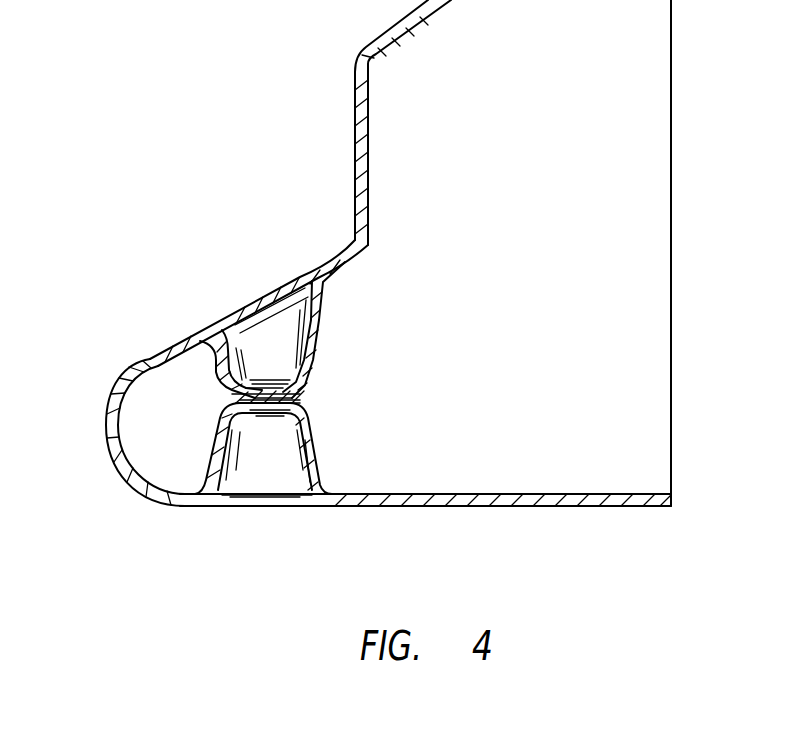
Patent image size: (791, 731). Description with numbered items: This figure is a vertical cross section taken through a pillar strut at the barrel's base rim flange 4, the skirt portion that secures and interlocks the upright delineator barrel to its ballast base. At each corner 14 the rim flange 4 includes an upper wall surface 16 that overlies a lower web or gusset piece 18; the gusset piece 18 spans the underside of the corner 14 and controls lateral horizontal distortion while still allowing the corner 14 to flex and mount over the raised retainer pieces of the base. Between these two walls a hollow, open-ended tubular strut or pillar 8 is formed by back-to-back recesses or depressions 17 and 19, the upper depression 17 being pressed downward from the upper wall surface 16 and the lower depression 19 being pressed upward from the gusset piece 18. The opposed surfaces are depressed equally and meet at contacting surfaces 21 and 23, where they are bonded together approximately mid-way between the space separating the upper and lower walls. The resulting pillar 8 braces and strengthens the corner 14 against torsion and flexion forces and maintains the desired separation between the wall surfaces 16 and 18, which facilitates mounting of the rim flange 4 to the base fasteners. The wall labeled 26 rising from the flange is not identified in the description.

The base rim flange 4 is at (113, 407).
The pillar 8 is at (320, 342).
The corner 14 is at (132, 478).
The upper wall surface 16 is at (158, 348).
The recess or depression 17 is at (265, 315).
The web or gusset piece 18 is at (400, 506).
The recess or depression 19 is at (270, 480).
The contacting surface 21 is at (265, 390).
The contacting surface 23 is at (263, 405).
The vertical wall 26 is at (350, 242).